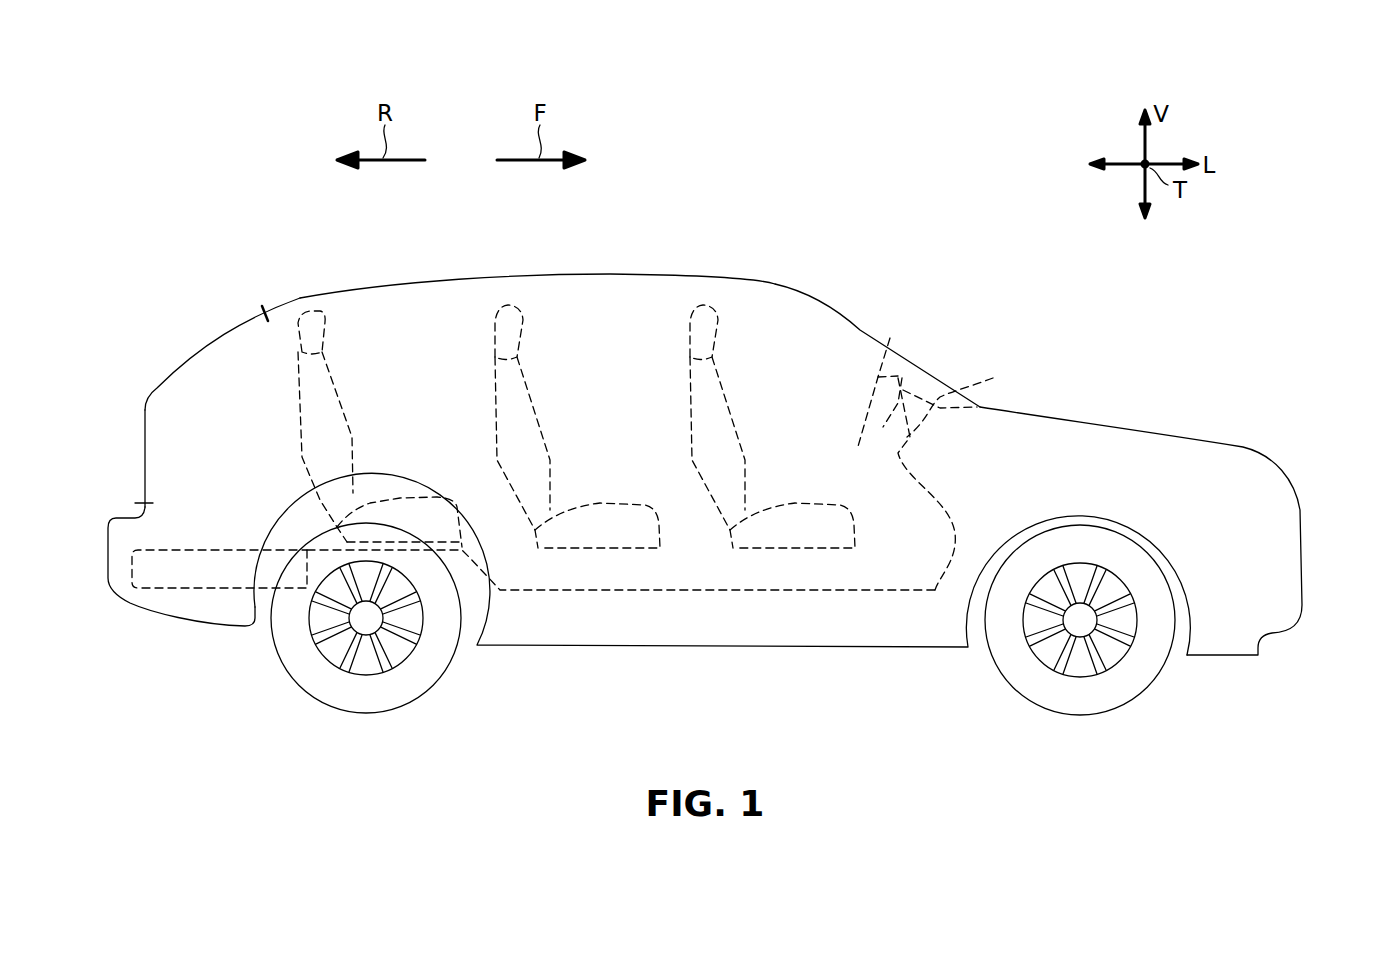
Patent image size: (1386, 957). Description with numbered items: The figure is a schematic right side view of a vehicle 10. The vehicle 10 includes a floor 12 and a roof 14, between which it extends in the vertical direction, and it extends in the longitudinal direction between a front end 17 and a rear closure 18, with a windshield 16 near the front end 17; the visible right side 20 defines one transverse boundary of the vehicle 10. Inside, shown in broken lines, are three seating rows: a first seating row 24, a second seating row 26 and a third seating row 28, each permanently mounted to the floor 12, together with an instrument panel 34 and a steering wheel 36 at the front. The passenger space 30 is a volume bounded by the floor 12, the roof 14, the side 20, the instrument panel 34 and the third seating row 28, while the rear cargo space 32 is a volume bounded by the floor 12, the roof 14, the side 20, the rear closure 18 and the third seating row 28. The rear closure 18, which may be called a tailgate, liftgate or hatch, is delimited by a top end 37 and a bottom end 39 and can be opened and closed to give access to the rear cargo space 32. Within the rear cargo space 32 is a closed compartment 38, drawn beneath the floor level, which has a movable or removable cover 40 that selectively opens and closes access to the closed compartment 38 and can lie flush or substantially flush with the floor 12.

The vehicle 10 is at (1048, 299).
The floor 12 is at (695, 590).
The roof 14 is at (628, 272).
The windshield 16 is at (917, 356).
The front end 17 is at (1300, 488).
The rear closure 18 is at (178, 373).
The right side 20 is at (158, 430).
The first seating row 24 is at (716, 305).
The second seating row 26 is at (505, 305).
The third seating row 28 is at (314, 311).
The passenger space 30 is at (597, 354).
The rear cargo space 32 is at (232, 414).
The instrument panel 34 is at (957, 393).
The steering wheel 36 is at (890, 338).
The top end 37 is at (262, 312).
The closed compartment 38 is at (187, 585).
The bottom end 39 is at (140, 501).
The cover 40 is at (232, 550).